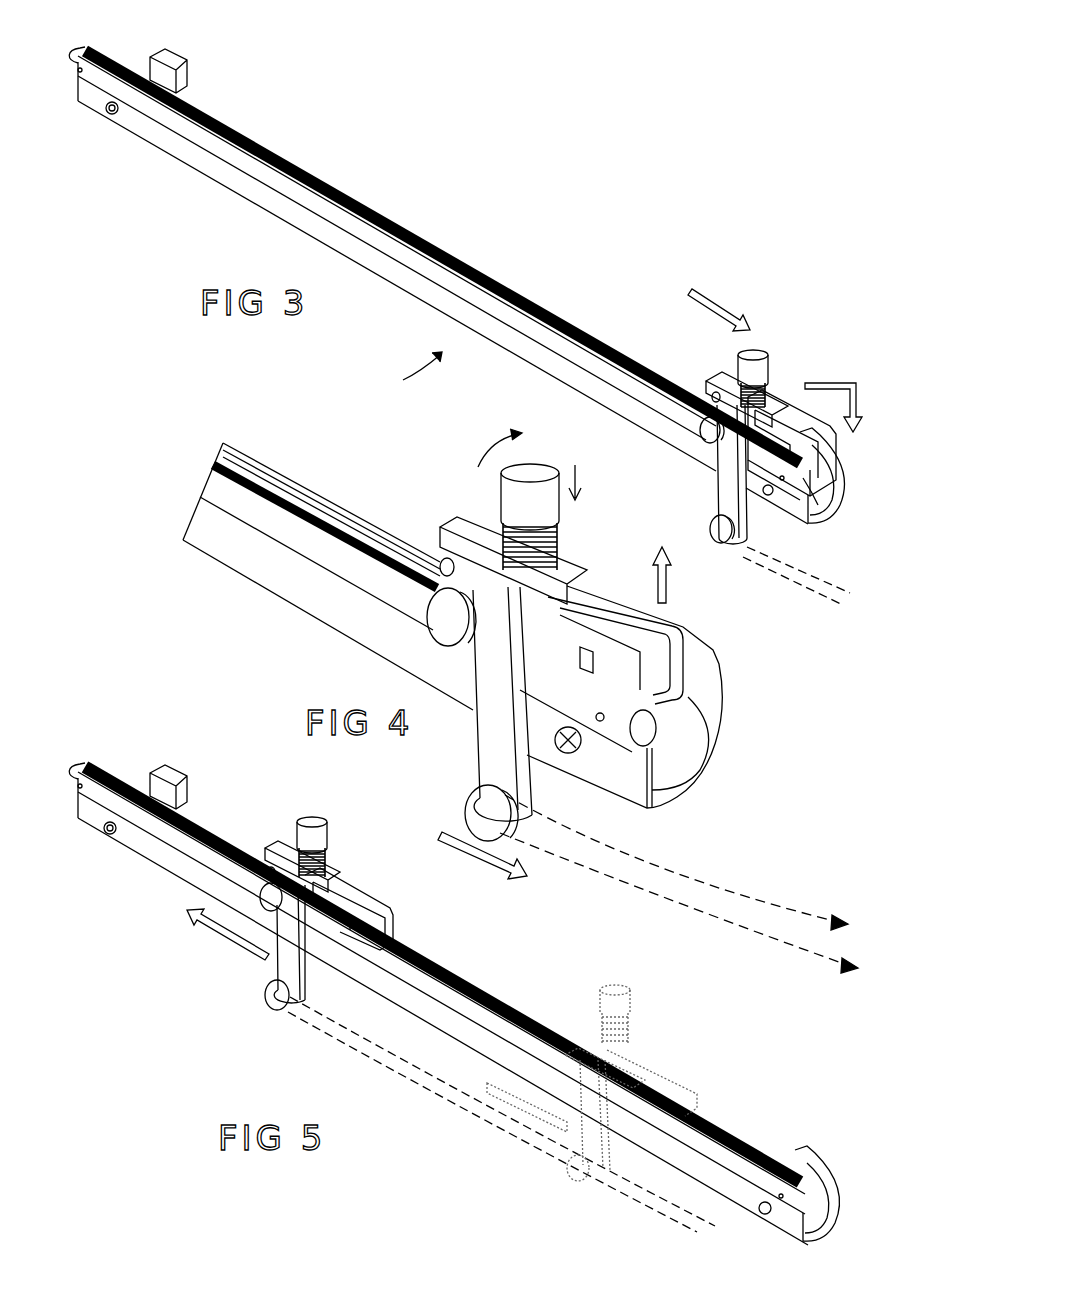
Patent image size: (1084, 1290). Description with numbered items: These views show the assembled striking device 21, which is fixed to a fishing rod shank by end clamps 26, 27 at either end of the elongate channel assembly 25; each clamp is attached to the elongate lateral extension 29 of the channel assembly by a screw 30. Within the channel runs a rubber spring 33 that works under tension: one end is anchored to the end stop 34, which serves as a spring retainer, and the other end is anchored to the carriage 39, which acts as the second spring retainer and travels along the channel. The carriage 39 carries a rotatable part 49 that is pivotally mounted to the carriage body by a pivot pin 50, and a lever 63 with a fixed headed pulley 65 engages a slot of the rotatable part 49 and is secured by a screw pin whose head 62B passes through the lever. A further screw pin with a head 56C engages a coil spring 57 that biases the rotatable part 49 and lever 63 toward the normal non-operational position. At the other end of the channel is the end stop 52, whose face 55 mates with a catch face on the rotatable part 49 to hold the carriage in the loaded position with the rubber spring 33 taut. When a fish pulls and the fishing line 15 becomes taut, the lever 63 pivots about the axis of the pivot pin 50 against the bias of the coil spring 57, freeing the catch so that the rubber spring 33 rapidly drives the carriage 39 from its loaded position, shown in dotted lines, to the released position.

In FIG. 3, the fishing line 15 is at (787, 575).
In FIG. 4, the fishing line 15 is at (645, 897).
In FIG. 5, the fishing line 15 is at (417, 1087).
In FIG. 3, the striking device 21 is at (438, 263).
In FIG. 3, the elongate channel assembly 25 is at (402, 374).
In FIG. 3, the end clamp 26 is at (175, 72).
In FIG. 5, the end clamp 26 is at (175, 788).
In FIG. 3, the end clamp 27 is at (827, 500).
In FIG. 5, the end clamp 27 is at (822, 1218).
In FIG. 3, the elongate lateral extension 29 is at (442, 305).
In FIG. 3, the screw 30 is at (110, 113).
In FIG. 3, the rubber spring 33 is at (372, 208).
In FIG. 4, the rubber spring 33 is at (270, 473).
In FIG. 5, the rubber spring 33 is at (190, 825).
In FIG. 3, the end stop 34 is at (88, 43).
In FIG. 3, the carriage 39 is at (738, 398).
In FIG. 5, the carriage 39 is at (362, 880).
In FIG. 4, the rotatable part 49 is at (705, 678).
In FIG. 3, the pivot pin 50 is at (700, 430).
In FIG. 4, the pivot pin 50 is at (440, 605).
In FIG. 3, the end stop 52 is at (787, 453).
In FIG. 3, the face 55 is at (800, 482).
In FIG. 3, the head 56C is at (757, 355).
In FIG. 4, the head 56C is at (530, 470).
In FIG. 3, the coil spring 57 is at (735, 380).
In FIG. 4, the coil spring 57 is at (498, 528).
In FIG. 3, the head 62B is at (728, 440).
In FIG. 4, the lever 63 is at (468, 764).
In FIG. 3, the fixed headed pulley 65 is at (712, 526).